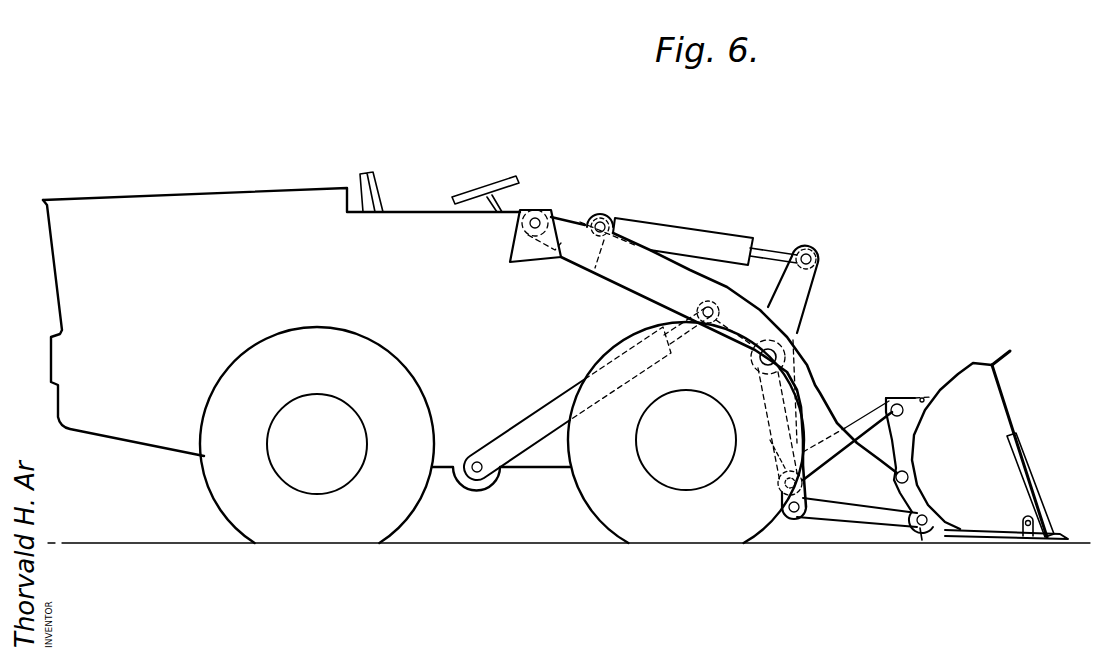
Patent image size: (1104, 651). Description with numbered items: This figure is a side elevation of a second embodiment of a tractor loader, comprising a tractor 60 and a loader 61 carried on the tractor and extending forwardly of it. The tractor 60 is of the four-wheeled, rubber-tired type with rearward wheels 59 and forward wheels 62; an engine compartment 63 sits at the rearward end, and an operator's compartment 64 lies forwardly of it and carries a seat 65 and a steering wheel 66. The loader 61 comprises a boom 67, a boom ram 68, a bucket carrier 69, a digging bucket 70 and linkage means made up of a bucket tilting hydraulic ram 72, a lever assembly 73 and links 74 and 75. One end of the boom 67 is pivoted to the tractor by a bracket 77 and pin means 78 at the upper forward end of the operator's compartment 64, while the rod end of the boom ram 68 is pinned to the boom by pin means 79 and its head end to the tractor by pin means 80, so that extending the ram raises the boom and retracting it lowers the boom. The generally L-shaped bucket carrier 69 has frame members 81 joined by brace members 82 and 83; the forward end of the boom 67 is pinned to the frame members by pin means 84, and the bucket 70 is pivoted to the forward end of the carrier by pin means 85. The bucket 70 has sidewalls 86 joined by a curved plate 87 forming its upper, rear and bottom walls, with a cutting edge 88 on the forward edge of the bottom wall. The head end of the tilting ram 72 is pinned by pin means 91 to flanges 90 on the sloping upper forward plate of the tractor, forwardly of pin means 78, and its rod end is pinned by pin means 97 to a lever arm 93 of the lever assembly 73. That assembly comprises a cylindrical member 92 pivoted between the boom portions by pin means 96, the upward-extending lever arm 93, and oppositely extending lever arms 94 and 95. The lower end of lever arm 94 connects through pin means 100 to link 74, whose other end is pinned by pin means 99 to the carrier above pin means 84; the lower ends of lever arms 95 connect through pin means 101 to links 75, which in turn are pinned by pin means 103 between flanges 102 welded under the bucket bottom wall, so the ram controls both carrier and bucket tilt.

The rearward wheels 59 is at (296, 545).
The tractor 60 is at (225, 186).
The loader 61 is at (845, 323).
The forward wheels 62 is at (650, 548).
The engine compartment 63 is at (95, 215).
The operator's compartment 64 is at (419, 201).
The seat 65 is at (374, 172).
The steering wheel 66 is at (503, 178).
The boom 67 is at (822, 384).
The boom ram 68 is at (522, 422).
The bucket carrier 69 is at (925, 396).
The digging bucket 70 is at (1010, 392).
The hydraulic ram 72 is at (698, 228).
The lever assembly 73 is at (820, 280).
The link 74 is at (849, 423).
The link 75 is at (850, 526).
The bracket 77 is at (510, 246).
The pin means 78 is at (538, 219).
The pin means 79 is at (705, 308).
The pin means 80 is at (476, 473).
The frame members 81 is at (930, 530).
The brace member 82 is at (907, 426).
The brace member 83 is at (957, 527).
The pin means 84 is at (892, 478).
The pin means 85 is at (1027, 537).
The sidewalls 86 is at (1013, 421).
The curved plate 87 is at (1000, 351).
The cutting edge 88 is at (907, 397).
The flanges 90 is at (589, 215).
The pin means 91 is at (604, 224).
The cylindrical member 92 is at (760, 340).
The lever arm 93 is at (774, 290).
The lever arm 94 is at (778, 456).
The lever arms 95 is at (768, 489).
The pin means 96 is at (748, 365).
The pin means 97 is at (806, 254).
The pin means 99 is at (895, 403).
The pin means 100 is at (782, 483).
The pin means 101 is at (792, 515).
The flanges 102 is at (921, 535).
The pin means 103 is at (912, 528).